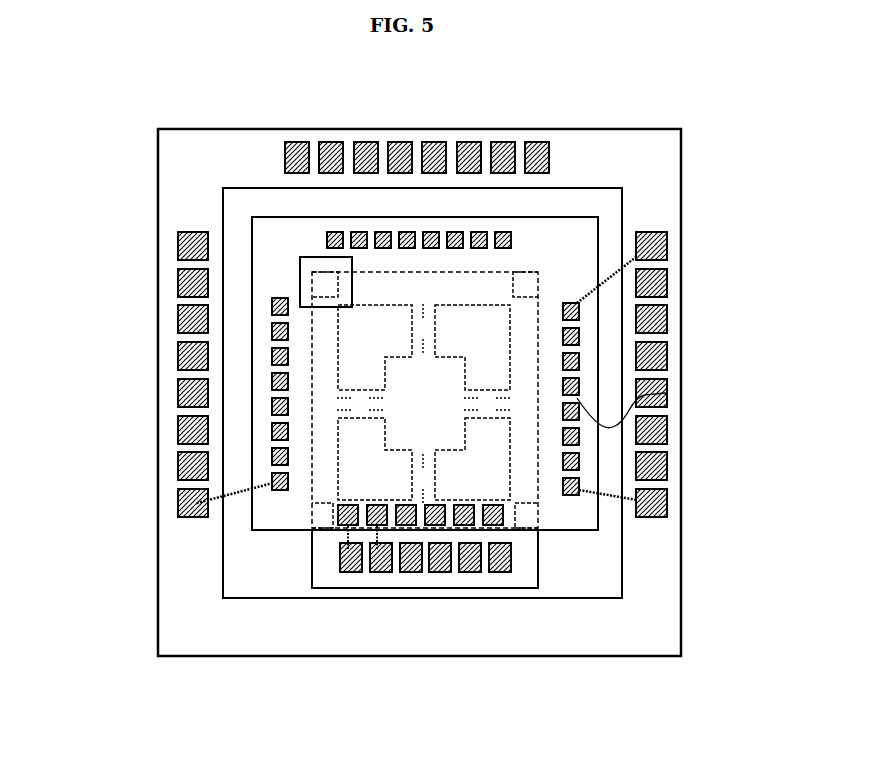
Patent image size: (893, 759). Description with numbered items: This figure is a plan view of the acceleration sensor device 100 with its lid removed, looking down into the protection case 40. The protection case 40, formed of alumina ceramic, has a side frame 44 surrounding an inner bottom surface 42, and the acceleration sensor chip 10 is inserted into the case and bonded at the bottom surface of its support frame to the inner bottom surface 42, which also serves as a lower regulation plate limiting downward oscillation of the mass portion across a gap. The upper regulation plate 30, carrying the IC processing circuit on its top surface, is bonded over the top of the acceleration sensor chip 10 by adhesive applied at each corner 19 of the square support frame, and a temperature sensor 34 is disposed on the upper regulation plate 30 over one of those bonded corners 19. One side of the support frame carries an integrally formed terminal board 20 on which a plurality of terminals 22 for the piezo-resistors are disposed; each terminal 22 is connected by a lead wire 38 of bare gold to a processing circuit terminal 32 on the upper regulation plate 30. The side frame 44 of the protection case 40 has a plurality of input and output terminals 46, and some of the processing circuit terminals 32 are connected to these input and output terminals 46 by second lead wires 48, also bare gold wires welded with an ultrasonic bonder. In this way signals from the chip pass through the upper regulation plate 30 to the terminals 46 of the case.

The acceleration sensor device 100 is at (52, 146).
The acceleration sensor chip 10 is at (522, 487).
The corner 19 is at (325, 287).
The terminal board 20 is at (525, 573).
The terminals 22 is at (442, 567).
The upper regulation plate 30 is at (568, 242).
The processing circuit terminals 32 is at (667, 393).
The temperature sensor 34 is at (320, 263).
The lead wire 38 is at (333, 535).
The protection case 40 is at (763, 93).
The inner bottom surface 42 is at (548, 205).
The side frame 44 is at (633, 187).
The input and output terminals 46 is at (663, 320).
The second lead wires 48 is at (610, 496).